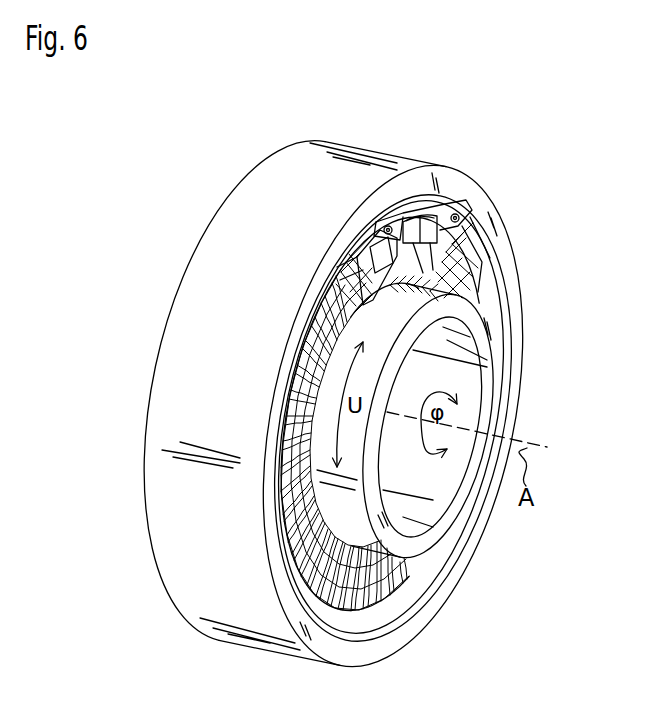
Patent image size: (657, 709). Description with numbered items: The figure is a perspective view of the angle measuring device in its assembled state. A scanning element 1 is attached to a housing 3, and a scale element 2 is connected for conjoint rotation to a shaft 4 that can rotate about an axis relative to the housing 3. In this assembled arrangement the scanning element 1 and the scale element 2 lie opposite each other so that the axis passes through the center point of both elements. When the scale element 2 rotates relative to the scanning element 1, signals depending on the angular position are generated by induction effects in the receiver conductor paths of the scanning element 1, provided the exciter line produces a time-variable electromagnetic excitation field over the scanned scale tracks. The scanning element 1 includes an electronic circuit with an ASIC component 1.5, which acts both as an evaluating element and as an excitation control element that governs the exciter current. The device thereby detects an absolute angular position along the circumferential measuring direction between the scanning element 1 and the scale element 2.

The scanning element 1 is at (441, 244).
The ASIC component 1.5 is at (382, 267).
The scale element 2 is at (401, 582).
The housing 3 is at (270, 200).
The shaft 4 is at (497, 384).